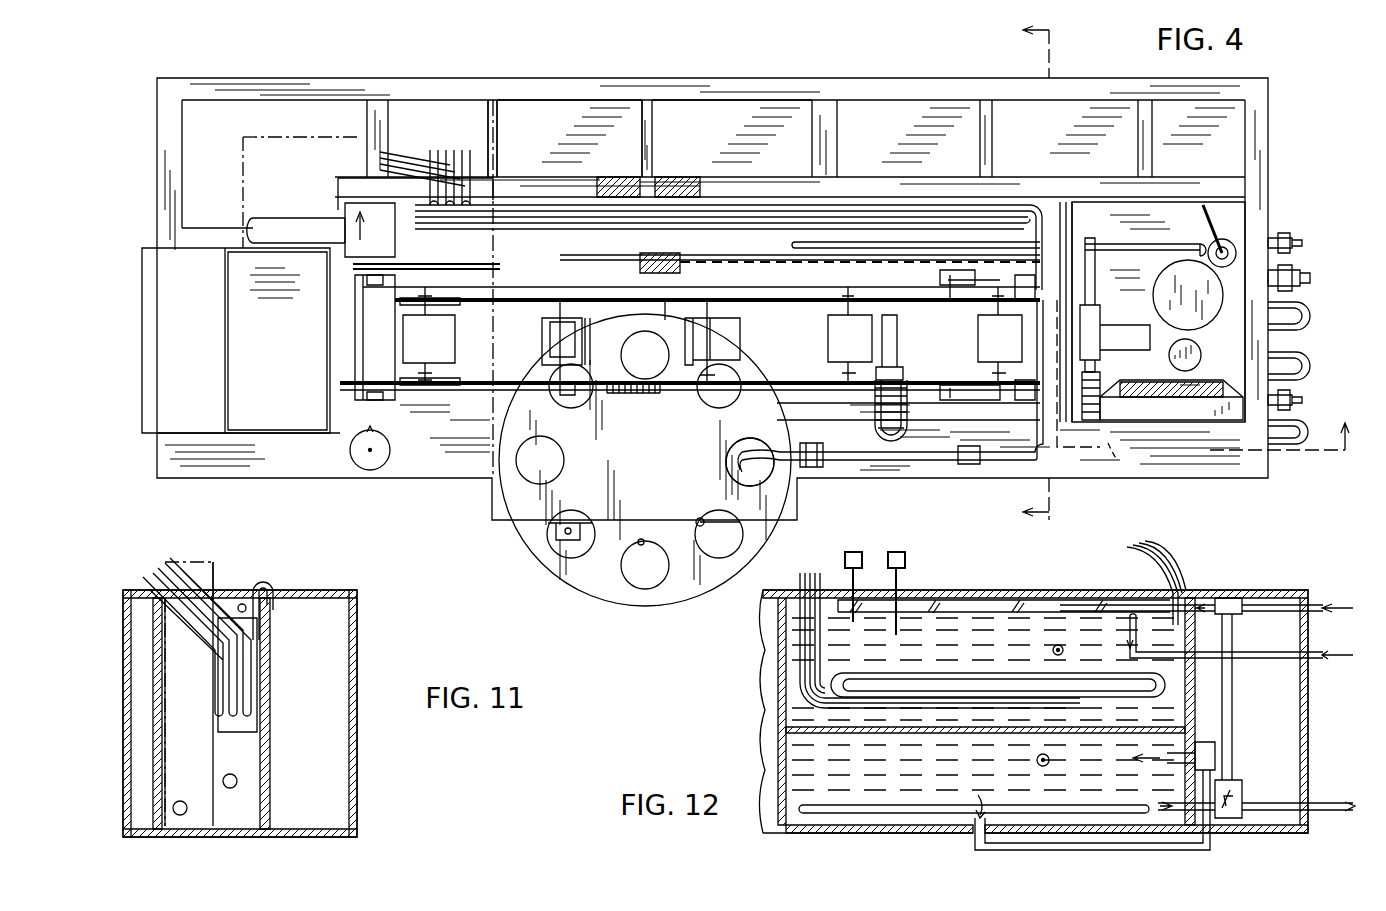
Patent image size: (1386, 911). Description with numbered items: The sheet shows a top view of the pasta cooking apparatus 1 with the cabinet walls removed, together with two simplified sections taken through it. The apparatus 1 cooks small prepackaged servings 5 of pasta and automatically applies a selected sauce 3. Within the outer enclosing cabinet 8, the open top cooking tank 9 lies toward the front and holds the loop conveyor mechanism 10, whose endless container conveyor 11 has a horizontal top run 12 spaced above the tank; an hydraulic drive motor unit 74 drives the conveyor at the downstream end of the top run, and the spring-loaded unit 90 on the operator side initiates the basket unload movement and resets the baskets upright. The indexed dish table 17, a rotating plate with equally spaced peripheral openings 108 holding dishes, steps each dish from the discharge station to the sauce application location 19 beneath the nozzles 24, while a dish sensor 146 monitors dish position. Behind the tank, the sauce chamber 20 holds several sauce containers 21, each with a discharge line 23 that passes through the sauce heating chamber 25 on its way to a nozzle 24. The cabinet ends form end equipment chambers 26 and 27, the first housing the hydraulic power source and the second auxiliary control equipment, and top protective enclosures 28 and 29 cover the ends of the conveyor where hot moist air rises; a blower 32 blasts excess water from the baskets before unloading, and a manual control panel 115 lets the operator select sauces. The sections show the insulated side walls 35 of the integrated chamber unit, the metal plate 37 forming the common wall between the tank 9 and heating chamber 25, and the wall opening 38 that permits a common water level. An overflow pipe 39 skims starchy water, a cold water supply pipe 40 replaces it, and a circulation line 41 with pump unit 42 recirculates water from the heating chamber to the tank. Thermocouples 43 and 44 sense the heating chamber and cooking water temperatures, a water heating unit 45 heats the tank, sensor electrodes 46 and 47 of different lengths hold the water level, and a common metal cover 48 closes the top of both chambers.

In FIG. 4, the pasta cooking apparatus 1 is at (458, 480).
In FIG. 4, the sauce 3 is at (435, 268).
In FIG. 4, the prepackaged serving 5 is at (548, 320).
In FIG. 4, the outer enclosing cabinet 8 is at (383, 500).
In FIG. 4, the cooking tank 9 is at (352, 315).
In FIG. 11, the cooking tank 9 is at (245, 815).
In FIG. 12, the cooking tank 9 is at (986, 768).
In FIG. 4, the loop conveyor mechanism 10 is at (510, 395).
In FIG. 11, the loop conveyor mechanism 10 is at (215, 578).
In FIG. 4, the endless container conveyor 11 is at (771, 272).
In FIG. 4, the horizontal top run 12 is at (845, 314).
In FIG. 4, the indexed dish table 17 is at (630, 605).
In FIG. 4, the sauce application location 19 is at (751, 470).
In FIG. 4, the sauce chamber 20 is at (826, 110).
In FIG. 11, the sauce chamber 20 is at (343, 752).
In FIG. 4, the sauce containers 21 is at (672, 110).
In FIG. 4, the discharge line 23 is at (685, 214).
In FIG. 11, the discharge line 23 is at (228, 700).
In FIG. 12, the discharge line 23 is at (797, 675).
In FIG. 4, the nozzles 24 is at (745, 470).
In FIG. 4, the sauce heating chamber 25 is at (569, 138).
In FIG. 11, the sauce heating chamber 25 is at (262, 637).
In FIG. 12, the sauce heating chamber 25 is at (986, 669).
In FIG. 4, the end equipment chamber 26 is at (263, 272).
In FIG. 4, the end equipment chamber 27 is at (1191, 323).
In FIG. 12, the end equipment chamber 27 is at (1288, 705).
In FIG. 4, the top protective enclosure 28 is at (245, 345).
In FIG. 4, the top protective enclosure 29 is at (1100, 386).
In FIG. 4, the blower 32 is at (900, 330).
In FIG. 4, the side walls 35 is at (510, 178).
In FIG. 4, the metal plate 37 is at (690, 298).
In FIG. 4, the wall opening 38 is at (1030, 240).
In FIG. 12, the wall opening 38 is at (790, 735).
In FIG. 12, the overflow pipe 39 is at (1110, 662).
In FIG. 12, the cold water supply pipe 40 is at (1255, 613).
In FIG. 12, the circulation line 41 is at (1157, 850).
In FIG. 12, the pump unit 42 is at (1215, 752).
In FIG. 12, the thermocouple 43 is at (1053, 654).
In FIG. 12, the thermocouple 44 is at (1052, 760).
In FIG. 12, the water heating unit 45 is at (870, 815).
In FIG. 12, the sensor electrode 46 is at (913, 593).
In FIG. 12, the sensor electrode 47 is at (835, 581).
In FIG. 12, the common metal cover 48 is at (1063, 596).
In FIG. 4, the hydraulic drive motor unit 74 is at (305, 222).
In FIG. 4, the spring-loaded unit 90 is at (670, 397).
In FIG. 4, the peripheral openings 108 is at (698, 521).
In FIG. 4, the manual control panel 115 is at (310, 430).
In FIG. 4, the dish sensor 146 is at (568, 541).